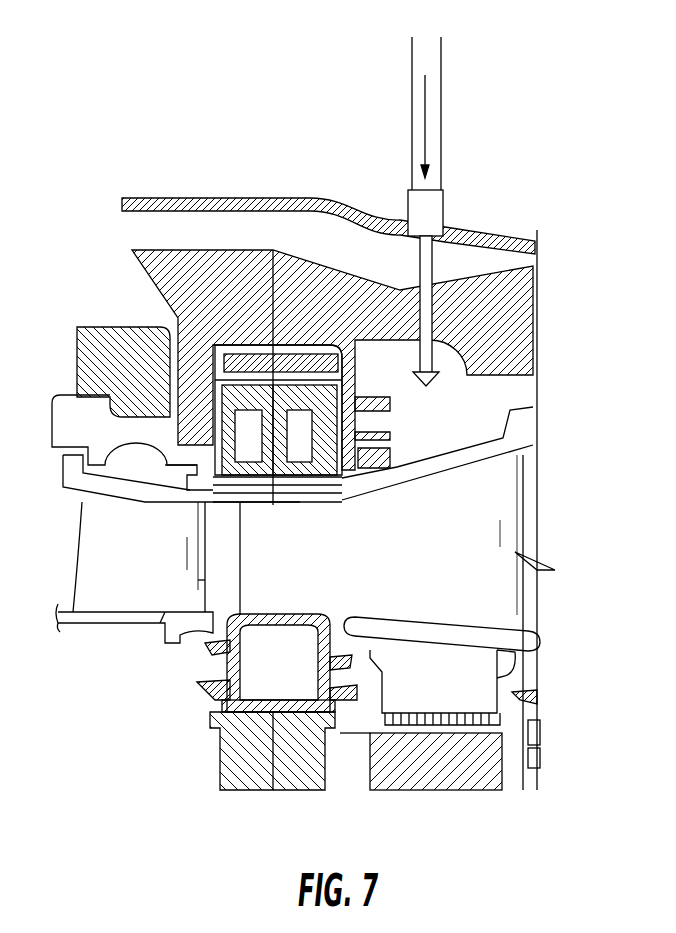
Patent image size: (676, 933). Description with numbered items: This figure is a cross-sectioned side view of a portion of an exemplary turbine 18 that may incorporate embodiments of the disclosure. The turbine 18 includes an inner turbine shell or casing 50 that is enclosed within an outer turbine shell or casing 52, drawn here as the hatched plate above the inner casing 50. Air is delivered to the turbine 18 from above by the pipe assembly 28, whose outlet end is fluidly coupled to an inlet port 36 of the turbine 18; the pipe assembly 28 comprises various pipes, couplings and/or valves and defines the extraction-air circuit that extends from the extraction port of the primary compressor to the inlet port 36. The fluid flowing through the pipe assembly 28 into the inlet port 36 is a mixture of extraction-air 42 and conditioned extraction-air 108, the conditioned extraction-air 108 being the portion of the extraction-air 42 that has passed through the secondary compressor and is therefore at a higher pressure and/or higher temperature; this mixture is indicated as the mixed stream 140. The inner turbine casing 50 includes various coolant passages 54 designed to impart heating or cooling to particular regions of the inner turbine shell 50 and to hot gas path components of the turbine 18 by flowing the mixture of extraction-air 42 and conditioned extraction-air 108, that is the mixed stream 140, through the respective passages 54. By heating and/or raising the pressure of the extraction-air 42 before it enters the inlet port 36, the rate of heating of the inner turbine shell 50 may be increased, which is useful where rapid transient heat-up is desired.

The turbine 18 is at (150, 699).
The pipe assembly 28 is at (471, 80).
The inlet port 36 is at (435, 205).
The extraction-air 42 is at (512, 126).
The inner turbine shell 50 is at (520, 333).
The outer turbine shell 52 is at (200, 197).
The coolant passages 54 is at (260, 450).
The conditioned extraction-air 108 is at (512, 126).
The mixed stream 140 is at (427, 128).